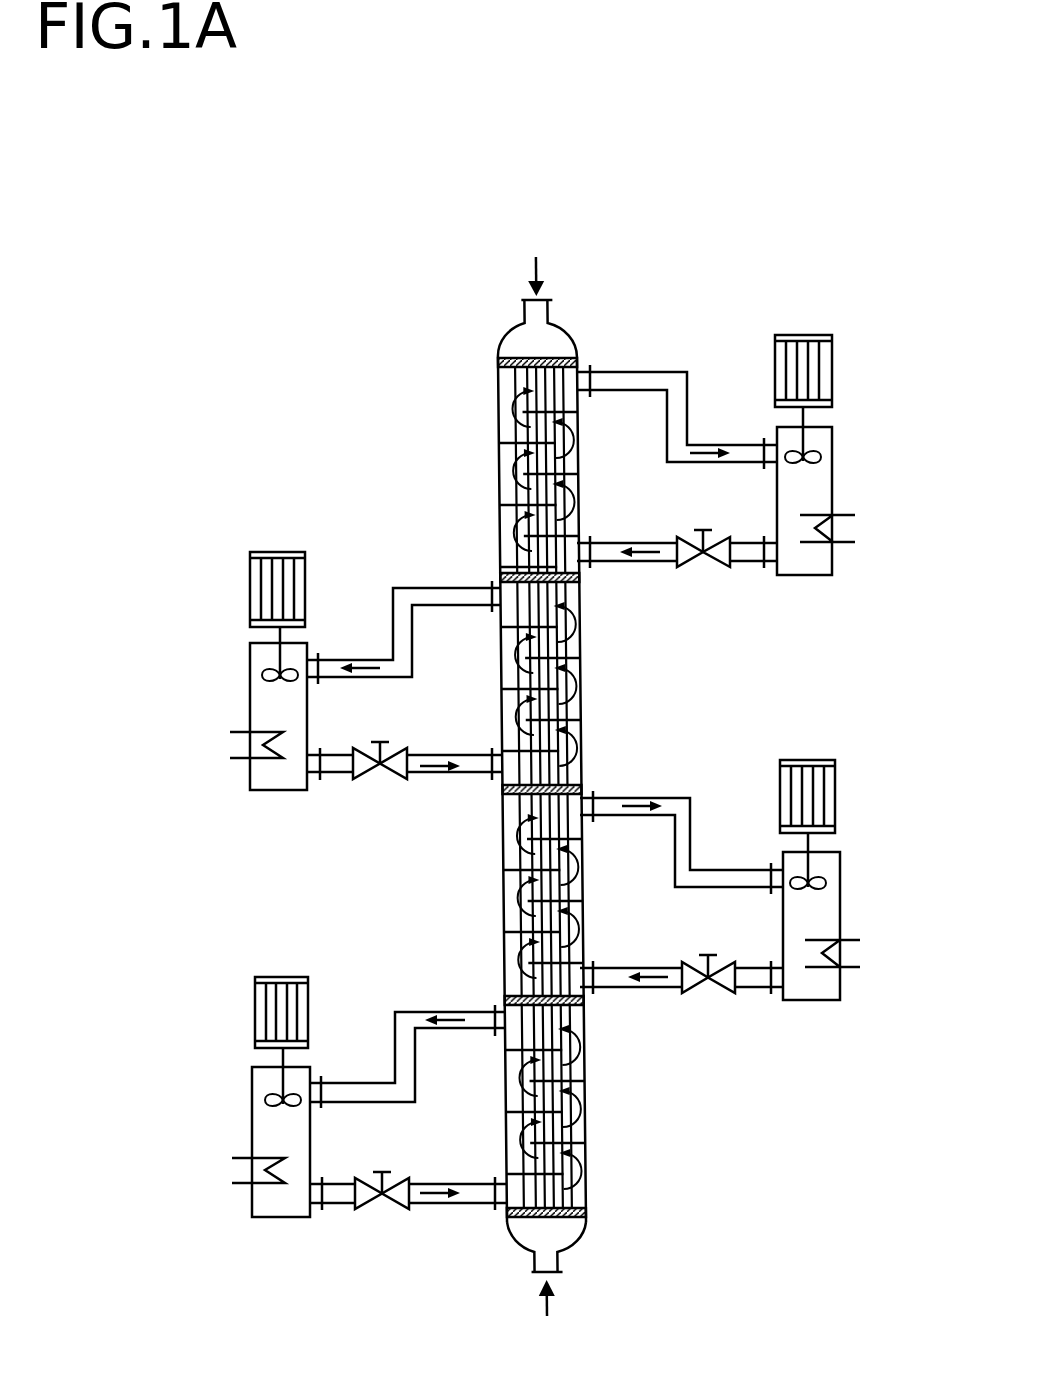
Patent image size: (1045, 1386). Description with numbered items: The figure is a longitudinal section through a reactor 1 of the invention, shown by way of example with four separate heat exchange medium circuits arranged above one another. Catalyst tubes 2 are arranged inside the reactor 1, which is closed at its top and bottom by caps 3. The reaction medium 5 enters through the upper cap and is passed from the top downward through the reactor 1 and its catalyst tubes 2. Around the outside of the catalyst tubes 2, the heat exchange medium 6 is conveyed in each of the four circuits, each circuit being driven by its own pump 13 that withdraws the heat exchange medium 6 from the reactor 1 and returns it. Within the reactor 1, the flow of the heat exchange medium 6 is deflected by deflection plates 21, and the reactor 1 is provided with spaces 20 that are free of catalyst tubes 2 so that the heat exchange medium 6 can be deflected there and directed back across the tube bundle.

The reactor 1 is at (565, 314).
The catalyst tubes 2 is at (512, 380).
The caps 3 is at (498, 338).
The reaction medium 5 is at (531, 271).
The heat exchange medium 6 is at (504, 488).
The pump 13 is at (815, 372).
The spaces 20 is at (507, 433).
The deflection plates 21 is at (514, 458).